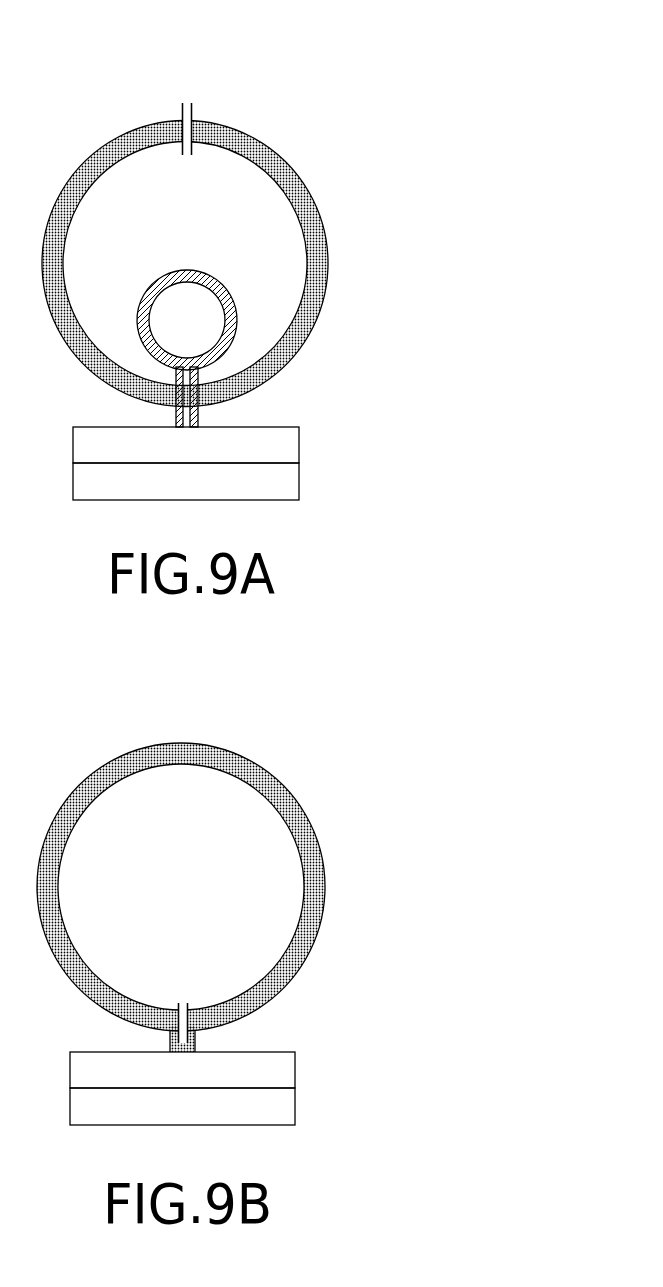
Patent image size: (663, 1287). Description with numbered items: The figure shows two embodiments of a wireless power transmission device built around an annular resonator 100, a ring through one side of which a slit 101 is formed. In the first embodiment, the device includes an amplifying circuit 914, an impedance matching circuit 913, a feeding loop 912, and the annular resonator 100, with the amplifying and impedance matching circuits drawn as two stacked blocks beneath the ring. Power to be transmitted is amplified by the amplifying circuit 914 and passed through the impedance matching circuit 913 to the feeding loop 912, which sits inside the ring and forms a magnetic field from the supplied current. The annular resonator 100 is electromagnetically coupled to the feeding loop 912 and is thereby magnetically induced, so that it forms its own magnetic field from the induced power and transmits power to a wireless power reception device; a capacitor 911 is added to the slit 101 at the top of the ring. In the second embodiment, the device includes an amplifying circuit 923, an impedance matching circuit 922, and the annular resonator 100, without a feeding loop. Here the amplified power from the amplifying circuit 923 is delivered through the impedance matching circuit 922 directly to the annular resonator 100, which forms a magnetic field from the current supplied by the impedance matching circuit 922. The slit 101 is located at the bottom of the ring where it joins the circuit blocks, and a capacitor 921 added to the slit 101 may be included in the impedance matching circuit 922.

In FIG. 9A, the annular resonator 100 is at (272, 146).
In FIG. 9B, the annular resonator 100 is at (266, 771).
In FIG. 9A, the slit 101 is at (188, 104).
In FIG. 9B, the slit 101 is at (184, 1002).
In FIG. 9A, the capacitor 911 is at (180, 108).
In FIG. 9A, the feeding loop 912 is at (177, 270).
In FIG. 9A, the impedance matching circuit 913 is at (292, 449).
In FIG. 9A, the amplifying circuit 914 is at (292, 484).
In FIG. 9B, the capacitor 921 is at (190, 1003).
In FIG. 9B, the impedance matching circuit 922 is at (280, 1073).
In FIG. 9B, the amplifying circuit 923 is at (280, 1108).